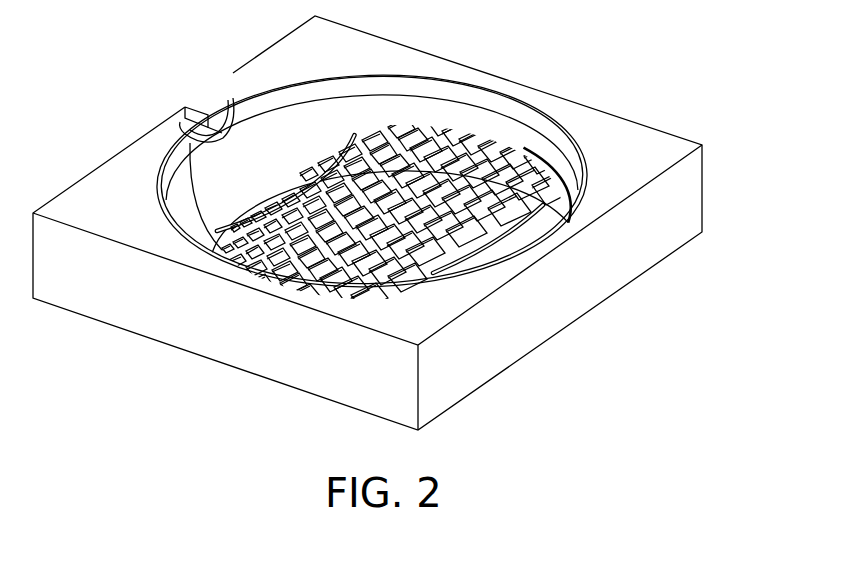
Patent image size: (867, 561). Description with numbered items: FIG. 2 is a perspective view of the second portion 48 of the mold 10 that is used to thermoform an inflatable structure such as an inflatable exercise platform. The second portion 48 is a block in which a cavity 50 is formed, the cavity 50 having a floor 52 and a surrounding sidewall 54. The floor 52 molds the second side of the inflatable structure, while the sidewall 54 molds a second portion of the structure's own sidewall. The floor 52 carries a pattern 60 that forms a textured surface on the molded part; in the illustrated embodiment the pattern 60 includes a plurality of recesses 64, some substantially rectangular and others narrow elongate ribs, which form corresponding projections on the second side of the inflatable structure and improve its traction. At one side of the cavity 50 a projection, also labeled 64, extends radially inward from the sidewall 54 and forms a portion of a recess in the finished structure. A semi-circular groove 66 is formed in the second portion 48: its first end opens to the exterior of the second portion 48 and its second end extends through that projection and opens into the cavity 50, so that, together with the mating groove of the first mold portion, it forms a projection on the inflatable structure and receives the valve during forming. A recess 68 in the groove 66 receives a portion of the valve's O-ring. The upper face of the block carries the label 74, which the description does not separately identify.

The mold 10 is at (169, 441).
The second portion 48 is at (190, 340).
The cavity 50 is at (436, 103).
The floor 52 is at (223, 208).
The sidewall 54 is at (563, 156).
The pattern 60 is at (315, 182).
The recesses 64 is at (490, 160).
The semi-circular groove 66 is at (193, 118).
The recess 68 is at (215, 128).
The top surface 74 is at (668, 142).